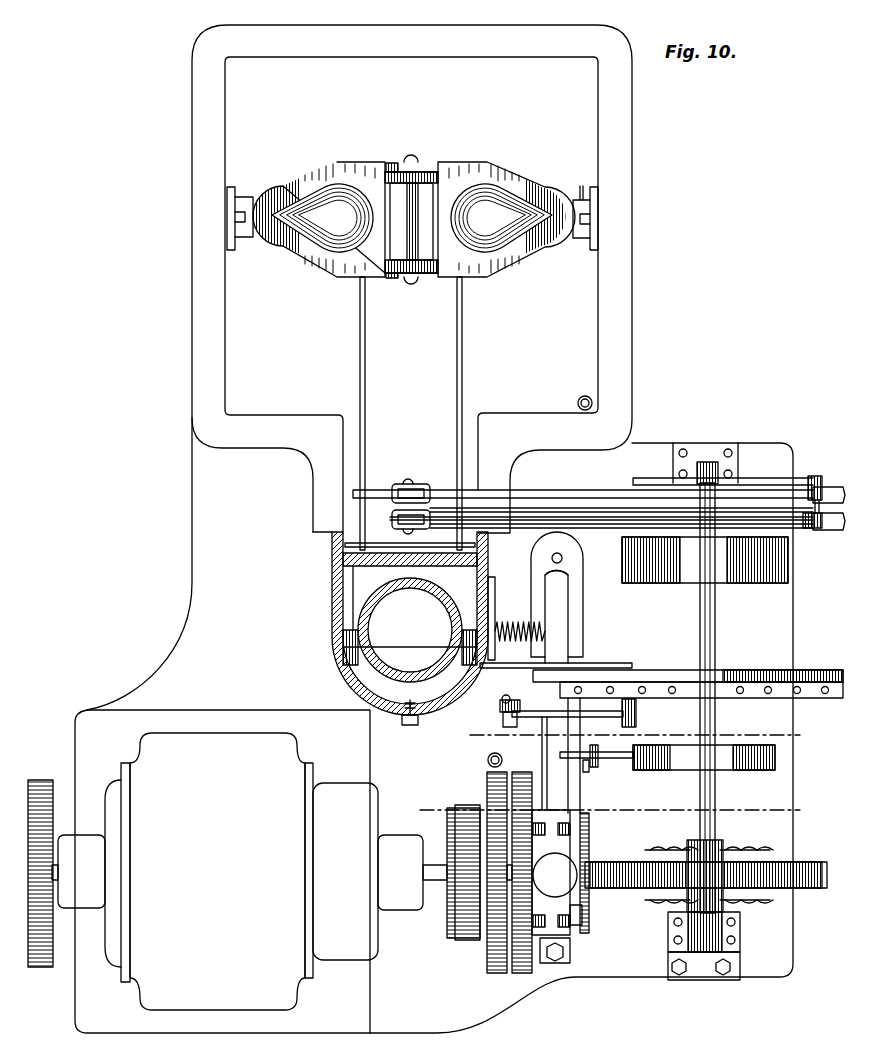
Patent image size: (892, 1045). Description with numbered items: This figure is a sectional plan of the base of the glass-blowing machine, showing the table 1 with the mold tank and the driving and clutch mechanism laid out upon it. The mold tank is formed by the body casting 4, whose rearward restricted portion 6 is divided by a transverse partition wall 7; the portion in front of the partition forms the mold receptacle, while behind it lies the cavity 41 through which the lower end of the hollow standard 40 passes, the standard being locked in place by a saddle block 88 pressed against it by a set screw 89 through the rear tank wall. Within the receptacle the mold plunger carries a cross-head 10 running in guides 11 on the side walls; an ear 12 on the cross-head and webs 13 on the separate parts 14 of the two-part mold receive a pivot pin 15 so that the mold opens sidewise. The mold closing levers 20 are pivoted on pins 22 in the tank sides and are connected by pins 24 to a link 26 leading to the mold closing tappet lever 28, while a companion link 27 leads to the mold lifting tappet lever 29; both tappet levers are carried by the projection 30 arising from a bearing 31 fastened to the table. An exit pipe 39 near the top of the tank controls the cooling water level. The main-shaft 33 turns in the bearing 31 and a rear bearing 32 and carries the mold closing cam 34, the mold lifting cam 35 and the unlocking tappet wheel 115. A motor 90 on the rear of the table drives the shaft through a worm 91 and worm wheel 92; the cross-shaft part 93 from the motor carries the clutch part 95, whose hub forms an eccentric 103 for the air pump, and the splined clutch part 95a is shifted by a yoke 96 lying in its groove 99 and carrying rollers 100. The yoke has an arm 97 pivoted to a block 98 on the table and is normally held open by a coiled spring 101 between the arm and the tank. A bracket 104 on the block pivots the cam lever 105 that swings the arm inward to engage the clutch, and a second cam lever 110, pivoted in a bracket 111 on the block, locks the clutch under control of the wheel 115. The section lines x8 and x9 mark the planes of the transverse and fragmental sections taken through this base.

The table 1 is at (205, 580).
The body casting 4 is at (228, 340).
The rearward restricted portion 6 is at (410, 607).
The transverse partition wall 7 is at (343, 566).
The cross-head 10 is at (581, 186).
The guides 11 is at (235, 210).
The ear 12 is at (426, 180).
The webs 13 is at (398, 166).
The separate parts of a two-part mold 14 is at (333, 168).
The pivot pin 15 is at (420, 205).
The mold closing levers 20 is at (457, 368).
The pins 22 is at (348, 546).
The pins 24 is at (374, 492).
The link 26 is at (412, 490).
The link 27 is at (395, 518).
The mold closing tappet lever 28 is at (633, 495).
The mold lifting tappet lever 29 is at (612, 522).
The projection 30 is at (790, 478).
The bearing 31 is at (710, 465).
The bearing 32 is at (735, 935).
The main-shaft 33 is at (715, 618).
The mold closing cam 34 is at (828, 487).
The mold lifting cam 35 is at (826, 525).
The exit pipe 39 is at (592, 403).
The standard 40 is at (372, 622).
The cavity 41 is at (473, 590).
The saddle block 88 is at (352, 652).
The set screw 89 is at (411, 726).
The motor 90 is at (203, 871).
The worm 91 is at (668, 897).
The worm wheel 92 is at (638, 866).
The part of cross-shaft 93 is at (433, 887).
The clutch part 95 is at (492, 965).
The clutch part 95a is at (522, 972).
The yoke 96 is at (570, 935).
The arm 97 is at (570, 637).
The block 98 is at (583, 590).
The groove 99 is at (589, 838).
The rollers 100 is at (583, 915).
The coiled spring 101 is at (507, 622).
The eccentric 103 is at (462, 812).
The bracket 104 is at (478, 754).
The cam lever 105 is at (612, 717).
The second cam lever 110 is at (630, 760).
The bracket 111 is at (594, 768).
The unlocking tappet wheel 115 is at (736, 762).
The section line x8 is at (607, 804).
The section line x9 is at (633, 726).